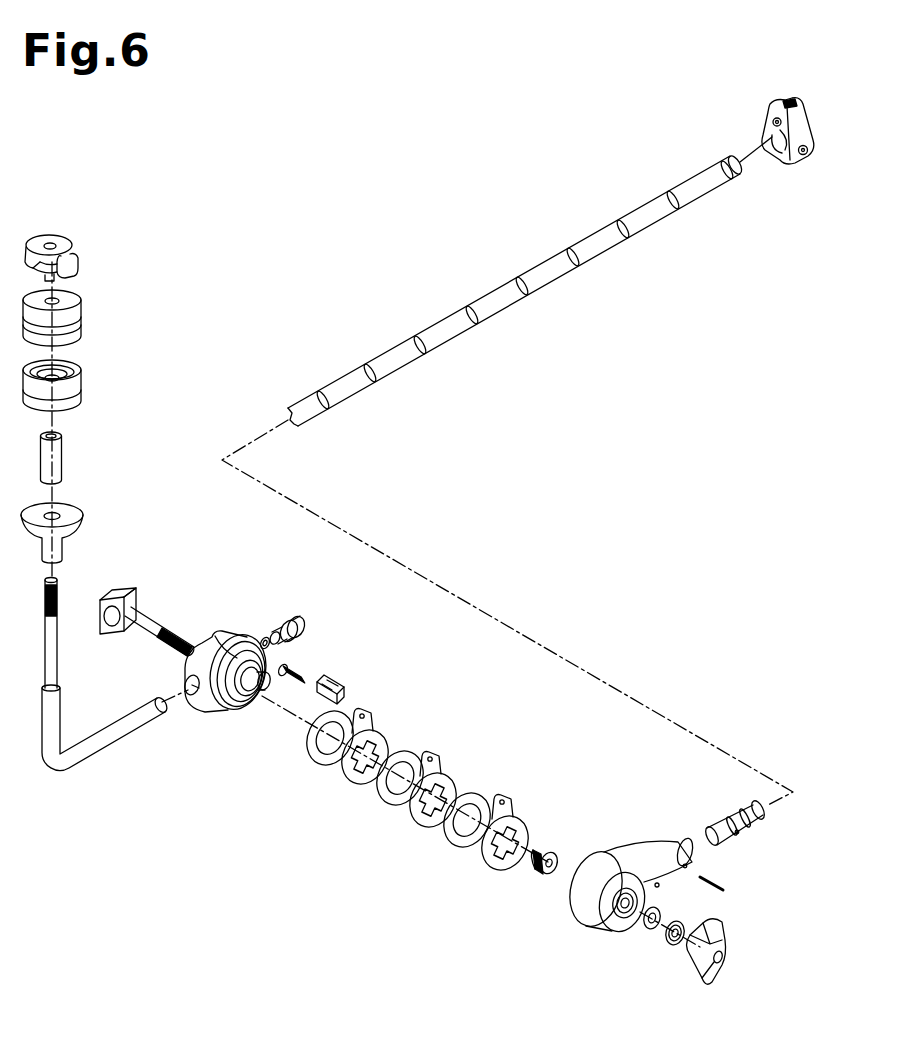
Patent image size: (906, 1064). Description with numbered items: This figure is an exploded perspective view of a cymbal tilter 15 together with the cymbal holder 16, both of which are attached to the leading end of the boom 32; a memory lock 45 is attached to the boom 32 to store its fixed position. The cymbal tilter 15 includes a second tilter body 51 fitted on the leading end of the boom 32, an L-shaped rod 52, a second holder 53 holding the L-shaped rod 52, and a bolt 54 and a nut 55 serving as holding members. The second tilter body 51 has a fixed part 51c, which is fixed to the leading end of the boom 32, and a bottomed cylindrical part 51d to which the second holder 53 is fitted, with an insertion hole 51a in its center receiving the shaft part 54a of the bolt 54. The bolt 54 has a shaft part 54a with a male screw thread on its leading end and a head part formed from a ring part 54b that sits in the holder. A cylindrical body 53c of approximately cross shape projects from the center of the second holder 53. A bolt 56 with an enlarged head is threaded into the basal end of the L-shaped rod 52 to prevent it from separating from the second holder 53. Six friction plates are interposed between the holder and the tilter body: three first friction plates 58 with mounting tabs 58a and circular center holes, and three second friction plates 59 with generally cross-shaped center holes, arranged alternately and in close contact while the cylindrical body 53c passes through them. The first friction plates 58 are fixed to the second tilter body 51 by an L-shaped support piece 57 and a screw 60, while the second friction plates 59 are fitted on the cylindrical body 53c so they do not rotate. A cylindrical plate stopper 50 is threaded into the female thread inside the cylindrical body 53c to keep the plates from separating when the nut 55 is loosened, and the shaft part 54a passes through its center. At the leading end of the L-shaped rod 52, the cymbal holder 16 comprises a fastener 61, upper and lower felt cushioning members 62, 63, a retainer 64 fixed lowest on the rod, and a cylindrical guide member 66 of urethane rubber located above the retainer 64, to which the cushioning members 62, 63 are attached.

The cymbal tilter 15 is at (442, 875).
The cymbal holder 16 is at (177, 283).
The boom 32 is at (724, 158).
The memory lock 45 is at (779, 98).
The plate stopper 50 is at (544, 875).
The second tilter body 51 is at (593, 930).
The insertion hole 51a is at (630, 933).
The fixed part 51c is at (673, 840).
The bottomed cylindrical part 51d is at (610, 877).
The L-shaped rod 52 is at (63, 774).
The second holder 53 is at (218, 633).
The cylindrical body 53c is at (238, 717).
The bolt 54 is at (115, 587).
The shaft part 54a is at (152, 642).
The ring part 54b is at (133, 592).
The nut 55 is at (723, 975).
The bolt 56 is at (304, 622).
The L-shaped support piece 57 is at (340, 681).
The first friction plate 58 is at (314, 757).
The mounting tab 58a is at (369, 710).
The second friction plate 59 is at (357, 780).
The screw 60 is at (288, 668).
The fastener 61 is at (73, 244).
The upper cushioning member 62 is at (83, 302).
The lower cushioning member 63 is at (83, 371).
The retainer 64 is at (83, 511).
The guide member 66 is at (63, 455).